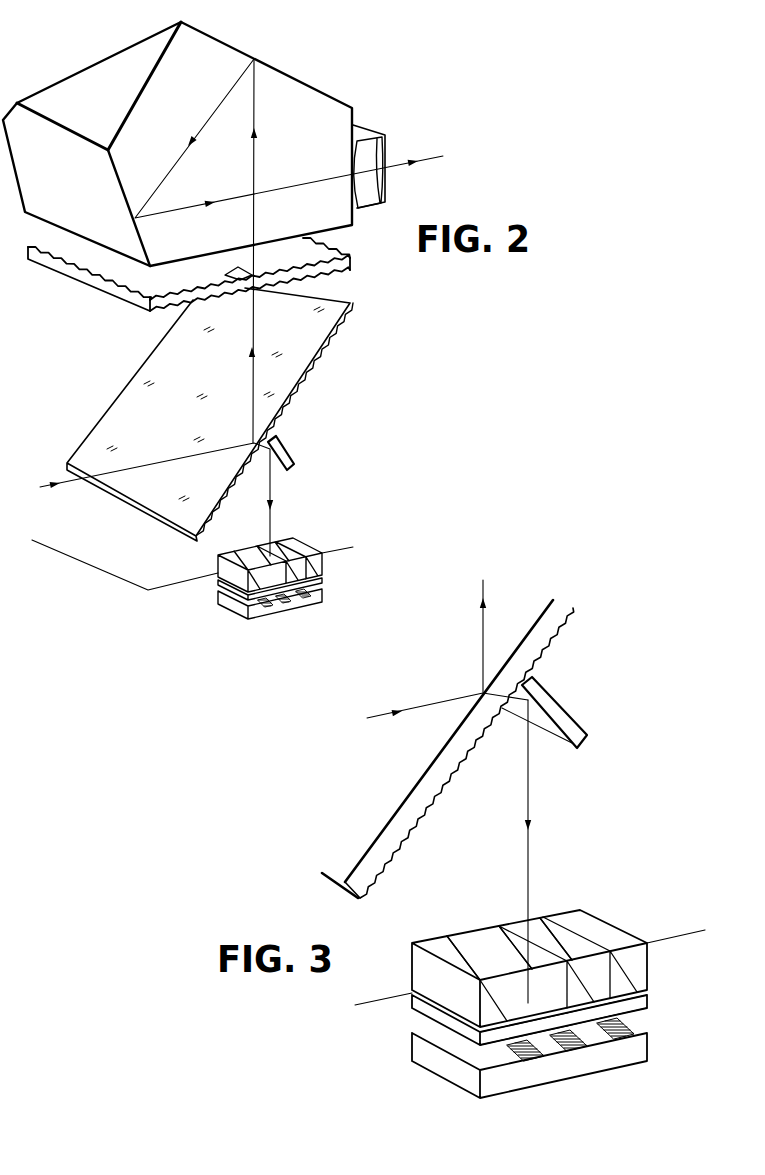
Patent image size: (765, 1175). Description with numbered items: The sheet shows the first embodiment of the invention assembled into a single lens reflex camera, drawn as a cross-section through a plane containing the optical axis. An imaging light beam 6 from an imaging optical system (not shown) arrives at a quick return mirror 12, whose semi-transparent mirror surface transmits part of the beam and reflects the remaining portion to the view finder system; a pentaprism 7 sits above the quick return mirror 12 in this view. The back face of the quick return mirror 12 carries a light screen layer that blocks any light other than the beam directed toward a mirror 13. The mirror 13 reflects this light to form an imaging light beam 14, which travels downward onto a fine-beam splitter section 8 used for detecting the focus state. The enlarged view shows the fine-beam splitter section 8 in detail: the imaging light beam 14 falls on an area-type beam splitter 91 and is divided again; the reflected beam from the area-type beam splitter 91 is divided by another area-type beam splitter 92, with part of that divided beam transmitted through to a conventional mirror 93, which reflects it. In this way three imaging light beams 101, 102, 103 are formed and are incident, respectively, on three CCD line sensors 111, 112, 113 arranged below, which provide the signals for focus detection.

In FIG. 2, the imaging light beam 6 is at (174, 458).
In FIG. 2, the prism 7 is at (307, 85).
In FIG. 2, the fine-beam splitter section 8 is at (305, 543).
In FIG. 3, the fine-beam splitter section 8 is at (557, 1005).
In FIG. 2, the quick return mirror 12 is at (355, 303).
In FIG. 3, the quick return mirror 12 is at (523, 620).
In FIG. 2, the mirror 13 is at (285, 446).
In FIG. 3, the imaging light beam 14 is at (531, 789).
In FIG. 3, the area-type beam splitter 91 is at (470, 952).
In FIG. 3, the area-type beam splitter 92 is at (512, 943).
In FIG. 3, the mirror 93 is at (560, 937).
In FIG. 3, the imaging light beam 101 is at (527, 1012).
In FIG. 3, the imaging light beam 102 is at (630, 1017).
In FIG. 3, the imaging light beam 103 is at (612, 988).
In FIG. 3, the CCD line sensor 111 is at (517, 1062).
In FIG. 3, the CCD line sensor 112 is at (563, 1048).
In FIG. 3, the CCD line sensor 113 is at (608, 1032).